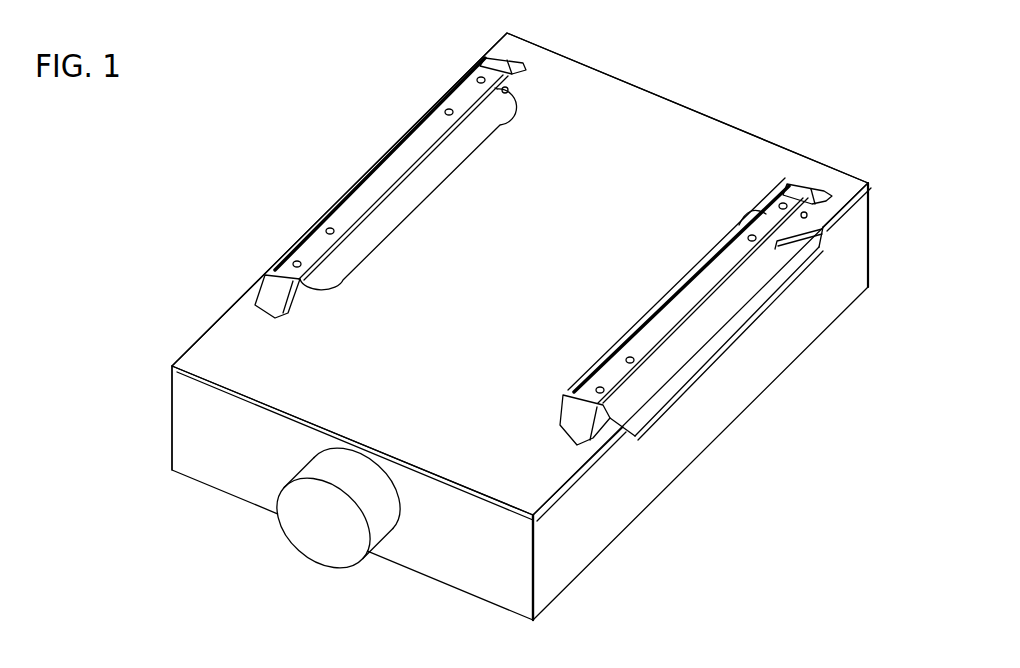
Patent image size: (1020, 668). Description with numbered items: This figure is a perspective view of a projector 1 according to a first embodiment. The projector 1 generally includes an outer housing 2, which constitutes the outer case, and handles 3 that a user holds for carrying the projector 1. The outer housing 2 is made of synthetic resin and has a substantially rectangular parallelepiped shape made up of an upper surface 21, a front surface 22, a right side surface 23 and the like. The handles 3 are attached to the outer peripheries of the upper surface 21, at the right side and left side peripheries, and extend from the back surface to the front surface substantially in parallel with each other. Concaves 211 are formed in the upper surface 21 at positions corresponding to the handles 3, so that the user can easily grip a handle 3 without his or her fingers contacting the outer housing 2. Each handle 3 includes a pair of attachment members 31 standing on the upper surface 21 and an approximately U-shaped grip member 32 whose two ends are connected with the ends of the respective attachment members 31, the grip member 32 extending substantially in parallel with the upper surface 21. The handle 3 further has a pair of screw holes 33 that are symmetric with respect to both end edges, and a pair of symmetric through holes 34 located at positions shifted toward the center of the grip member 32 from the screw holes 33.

The projector 1 is at (262, 109).
The outer housing 2 is at (215, 335).
The upper surface 21 is at (622, 97).
The concave 211 is at (410, 203).
The front surface 22 is at (432, 567).
The right side surface 23 is at (687, 448).
The handle 3 is at (400, 158).
The attachment member 31 is at (822, 189).
The grip member 32 is at (697, 293).
The screw hole 33 is at (783, 204).
The through hole 34 is at (752, 237).